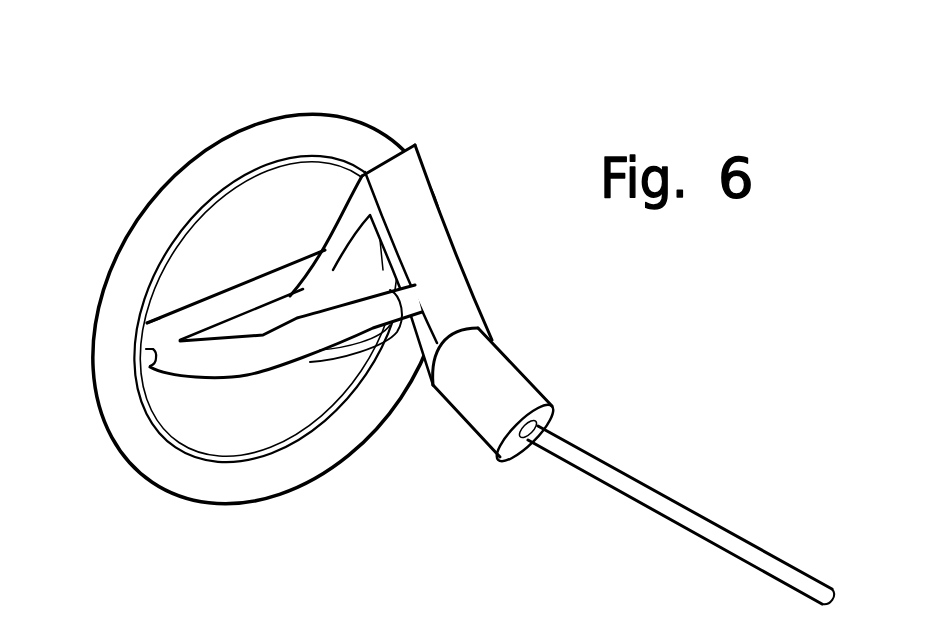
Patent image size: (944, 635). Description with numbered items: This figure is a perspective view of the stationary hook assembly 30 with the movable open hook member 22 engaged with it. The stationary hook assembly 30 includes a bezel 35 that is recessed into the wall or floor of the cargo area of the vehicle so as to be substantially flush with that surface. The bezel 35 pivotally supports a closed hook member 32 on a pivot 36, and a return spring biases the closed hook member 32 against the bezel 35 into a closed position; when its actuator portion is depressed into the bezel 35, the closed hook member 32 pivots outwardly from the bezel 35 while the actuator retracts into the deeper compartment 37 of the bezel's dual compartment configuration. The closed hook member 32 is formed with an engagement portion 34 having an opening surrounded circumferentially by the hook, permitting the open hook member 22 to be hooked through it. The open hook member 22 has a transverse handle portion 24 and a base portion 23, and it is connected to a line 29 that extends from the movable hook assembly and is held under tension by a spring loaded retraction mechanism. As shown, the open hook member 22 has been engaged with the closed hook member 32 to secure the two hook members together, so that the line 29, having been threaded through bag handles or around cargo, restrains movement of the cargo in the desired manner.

The stationary hook assembly 30 is at (218, 68).
The bezel 35 is at (327, 117).
The open hook member 22 is at (430, 195).
The transverse handle portion 24 is at (340, 227).
The engagement portion 34 is at (175, 342).
The closed hook member 32 is at (268, 360).
The pivot 36 is at (150, 368).
The deeper compartment 37 is at (244, 432).
The base portion 23 is at (502, 383).
The line 29 is at (667, 508).